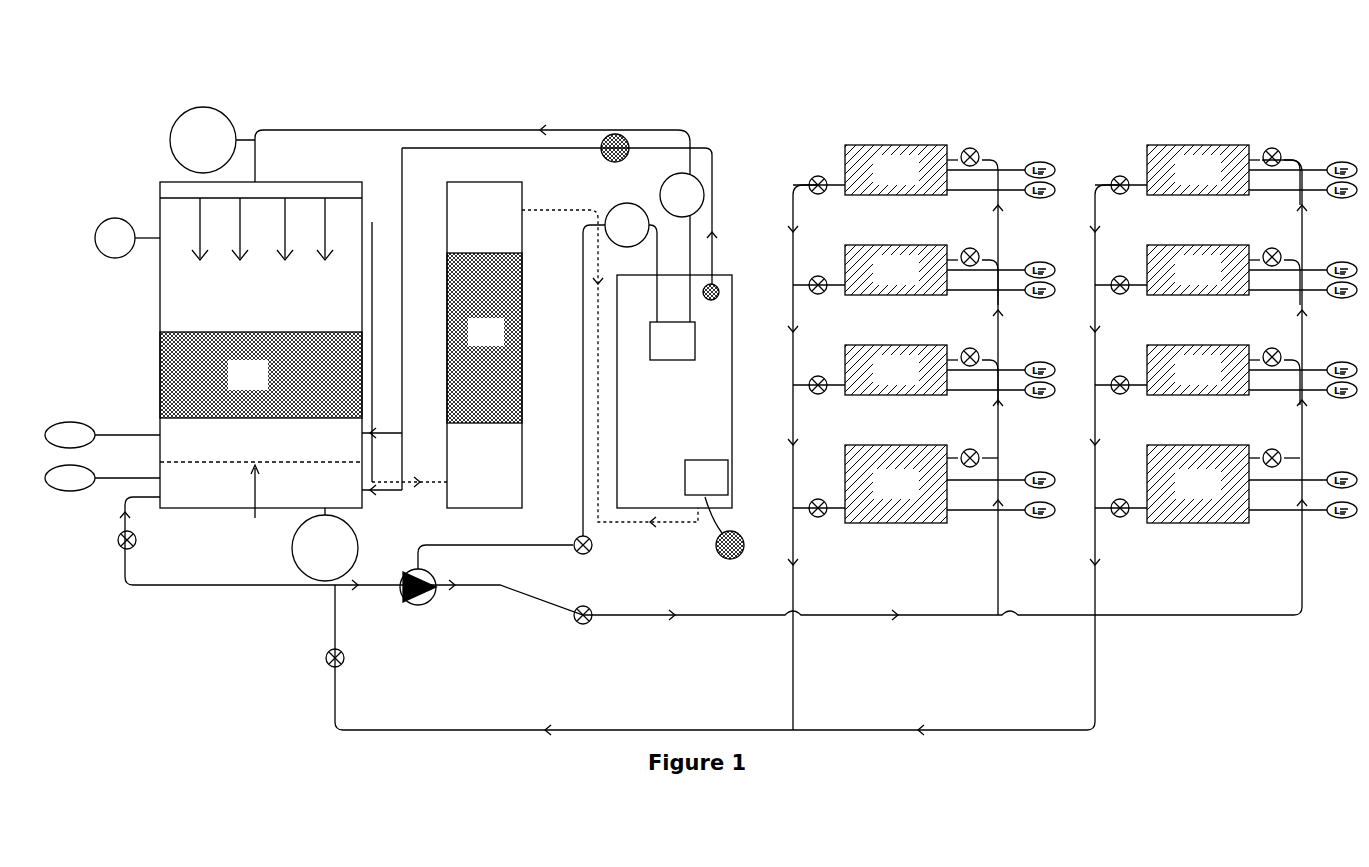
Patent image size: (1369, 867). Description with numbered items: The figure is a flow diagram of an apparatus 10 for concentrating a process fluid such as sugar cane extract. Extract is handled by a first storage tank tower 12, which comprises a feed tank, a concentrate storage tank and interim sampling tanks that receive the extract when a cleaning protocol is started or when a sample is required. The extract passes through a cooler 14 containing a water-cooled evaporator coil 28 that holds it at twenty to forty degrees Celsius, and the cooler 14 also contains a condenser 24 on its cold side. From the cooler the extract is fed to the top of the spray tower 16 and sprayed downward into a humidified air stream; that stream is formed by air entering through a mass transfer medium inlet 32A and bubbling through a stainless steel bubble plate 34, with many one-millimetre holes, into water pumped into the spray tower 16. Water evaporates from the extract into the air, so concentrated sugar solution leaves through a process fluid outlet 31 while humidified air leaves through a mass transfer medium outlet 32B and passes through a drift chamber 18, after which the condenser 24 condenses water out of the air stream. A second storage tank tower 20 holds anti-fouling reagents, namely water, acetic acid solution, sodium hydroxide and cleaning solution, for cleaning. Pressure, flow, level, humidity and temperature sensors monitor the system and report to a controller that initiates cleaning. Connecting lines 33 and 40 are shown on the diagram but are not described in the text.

The apparatus for concentrating a process fluid 10 is at (771, 162).
The first storage tank tower 12 is at (882, 143).
The cooler 14 is at (674, 391).
The spray tower 16 is at (261, 345).
The drift chamber 18 is at (484, 345).
The second storage tank tower 20 is at (1197, 143).
The condenser 24 is at (706, 477).
The water-cooled evaporator coil 28 is at (672, 341).
The process fluid outlet 31 is at (168, 504).
The mass transfer medium inlet 32A is at (356, 436).
The mass transfer medium outlet 32B is at (356, 486).
The connection pipe 33 is at (372, 250).
The bubble plate 34 is at (254, 508).
The supply line 40 is at (428, 480).